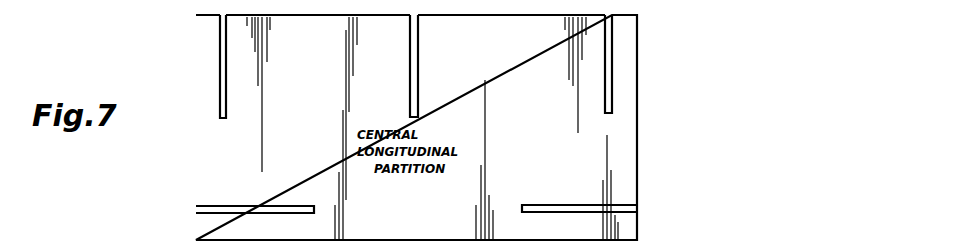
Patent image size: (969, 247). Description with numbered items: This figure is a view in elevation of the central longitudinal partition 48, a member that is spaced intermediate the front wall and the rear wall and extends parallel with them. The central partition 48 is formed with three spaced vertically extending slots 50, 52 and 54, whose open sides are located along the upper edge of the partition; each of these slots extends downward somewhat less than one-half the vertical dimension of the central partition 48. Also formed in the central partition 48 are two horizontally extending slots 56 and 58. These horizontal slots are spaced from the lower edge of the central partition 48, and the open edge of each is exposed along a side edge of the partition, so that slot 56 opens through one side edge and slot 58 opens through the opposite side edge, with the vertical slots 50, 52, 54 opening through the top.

The central longitudinal partition 48 is at (633, 119).
The vertically extending slot 50 is at (226, 103).
The vertically extending slot 52 is at (419, 87).
The vertically extending slot 54 is at (603, 97).
The horizontally extending slot 56 is at (267, 204).
The horizontally extending slot 58 is at (540, 201).